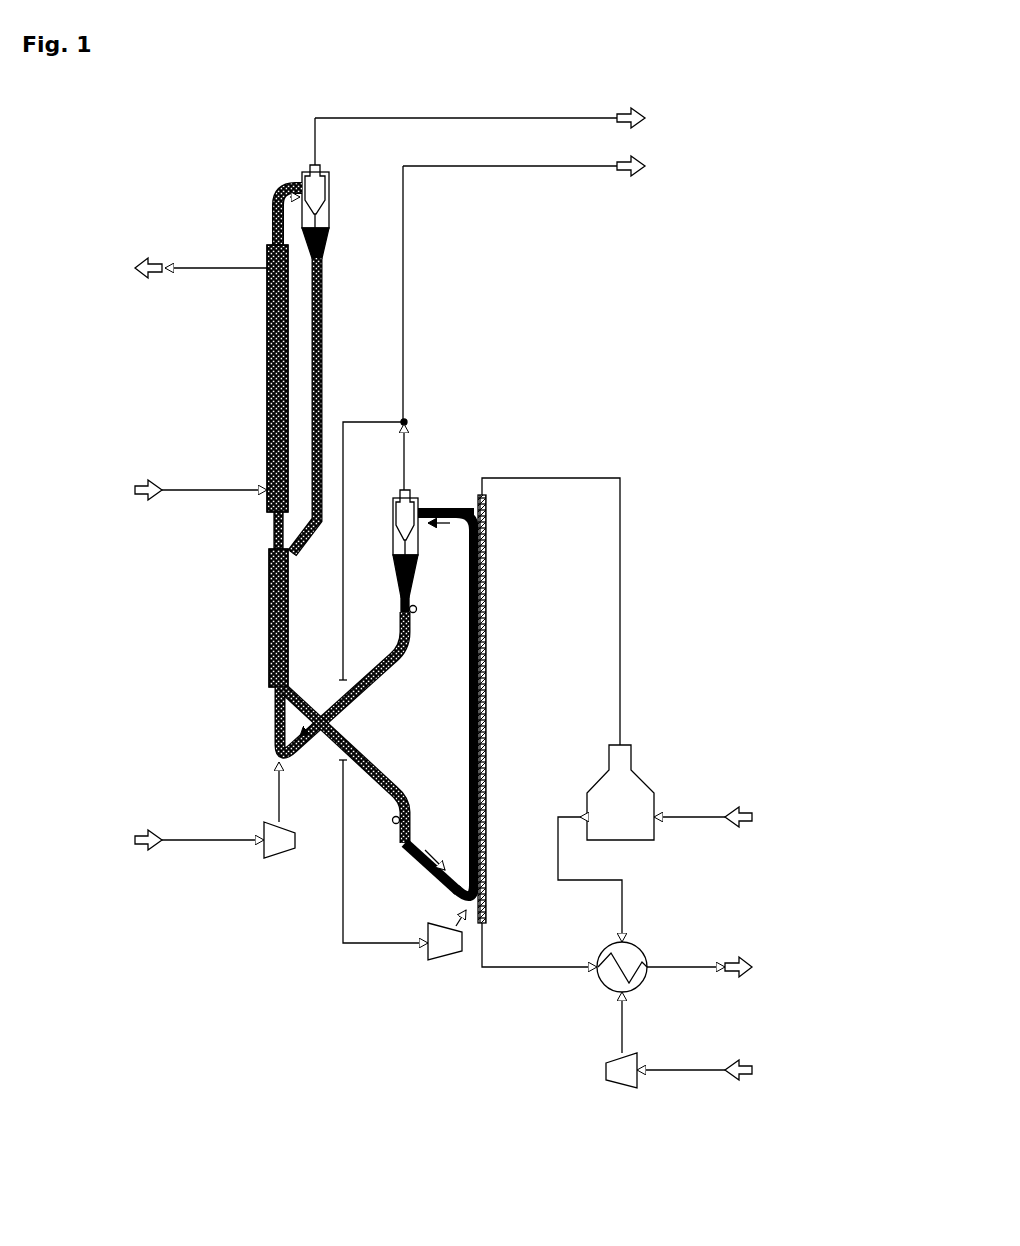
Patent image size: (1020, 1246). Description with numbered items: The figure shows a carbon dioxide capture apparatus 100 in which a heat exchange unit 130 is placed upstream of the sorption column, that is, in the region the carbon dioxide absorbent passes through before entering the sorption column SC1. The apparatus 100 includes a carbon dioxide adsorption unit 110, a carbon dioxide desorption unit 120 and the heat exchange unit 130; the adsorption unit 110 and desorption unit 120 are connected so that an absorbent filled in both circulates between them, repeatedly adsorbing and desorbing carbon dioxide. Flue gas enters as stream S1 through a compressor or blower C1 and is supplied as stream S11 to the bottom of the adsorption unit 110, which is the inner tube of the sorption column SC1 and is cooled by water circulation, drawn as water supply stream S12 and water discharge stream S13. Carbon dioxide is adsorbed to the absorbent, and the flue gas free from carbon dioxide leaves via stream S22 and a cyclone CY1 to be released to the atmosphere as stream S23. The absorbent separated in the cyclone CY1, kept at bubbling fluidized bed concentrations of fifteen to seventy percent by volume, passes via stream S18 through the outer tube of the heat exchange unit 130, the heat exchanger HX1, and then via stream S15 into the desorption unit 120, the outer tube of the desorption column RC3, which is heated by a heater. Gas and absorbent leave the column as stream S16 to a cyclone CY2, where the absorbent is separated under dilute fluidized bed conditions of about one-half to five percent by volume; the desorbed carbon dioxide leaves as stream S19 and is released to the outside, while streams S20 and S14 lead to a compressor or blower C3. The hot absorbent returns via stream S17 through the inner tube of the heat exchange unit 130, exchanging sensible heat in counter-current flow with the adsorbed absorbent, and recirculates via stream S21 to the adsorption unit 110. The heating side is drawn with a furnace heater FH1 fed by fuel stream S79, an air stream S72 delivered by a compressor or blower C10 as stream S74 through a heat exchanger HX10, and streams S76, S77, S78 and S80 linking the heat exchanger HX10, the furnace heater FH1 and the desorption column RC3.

The carbon dioxide capture apparatus 100 is at (207, 140).
The carbon dioxide adsorption unit 110 is at (260, 318).
The carbon dioxide desorption unit 120 is at (498, 618).
The heat exchange unit 130 is at (262, 618).
The stream S1 is at (167, 823).
The stream S11 is at (233, 796).
The stream S12 is at (186, 472).
The stream S13 is at (158, 252).
The stream S14 is at (359, 925).
The stream S15 is at (359, 858).
The stream S16 is at (426, 493).
The stream S17 is at (403, 650).
The stream S18 is at (319, 287).
The stream S19 is at (403, 460).
The stream S20 is at (403, 400).
The stream S21 is at (226, 532).
The stream S22 is at (226, 228).
The stream S23 is at (291, 100).
The air stream S72 is at (673, 1053).
The compressed air stream S74 is at (574, 1037).
The heated fluid stream S76 is at (509, 949).
The flue gas outlet stream S77 is at (671, 949).
The hot combustion gas stream S78 is at (574, 920).
The fuel stream S79 is at (670, 800).
The heating fluid stream S80 is at (541, 460).
The carbon dioxide sorption column SC1 is at (253, 378).
The cyclone CY1 is at (342, 207).
The cyclone CY2 is at (381, 548).
The heat exchanger HX1 is at (297, 618).
The carbon dioxide desorption column RC3 is at (446, 704).
The compressor or blower C1 is at (280, 855).
The compressor or blower C3 is at (445, 951).
The furnace heater FH1 is at (620, 807).
The heat exchanger HX10 is at (639, 974).
The compressor or blower C10 is at (622, 1084).